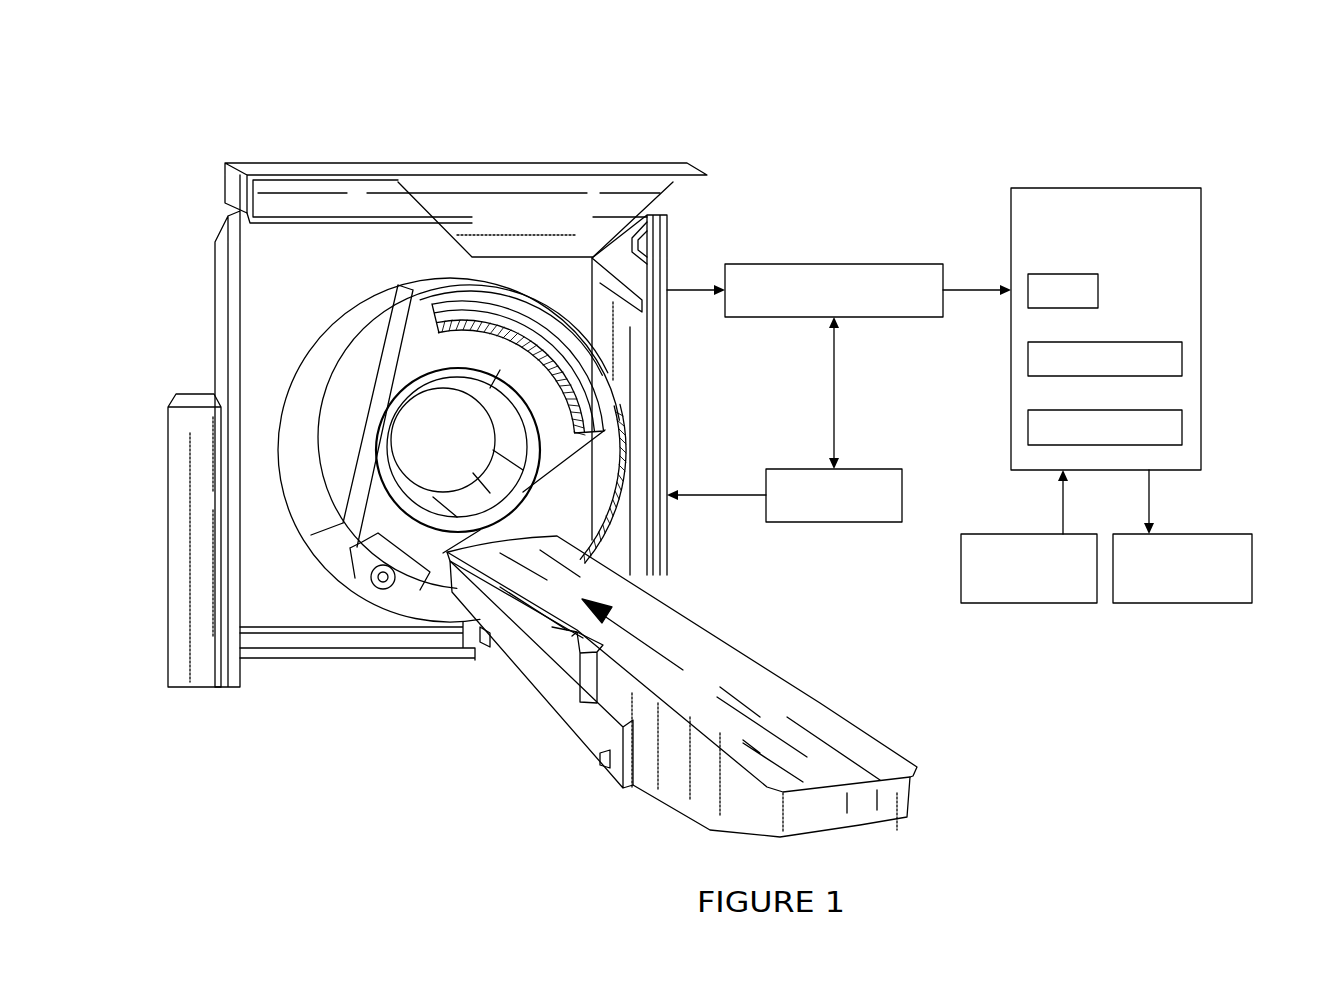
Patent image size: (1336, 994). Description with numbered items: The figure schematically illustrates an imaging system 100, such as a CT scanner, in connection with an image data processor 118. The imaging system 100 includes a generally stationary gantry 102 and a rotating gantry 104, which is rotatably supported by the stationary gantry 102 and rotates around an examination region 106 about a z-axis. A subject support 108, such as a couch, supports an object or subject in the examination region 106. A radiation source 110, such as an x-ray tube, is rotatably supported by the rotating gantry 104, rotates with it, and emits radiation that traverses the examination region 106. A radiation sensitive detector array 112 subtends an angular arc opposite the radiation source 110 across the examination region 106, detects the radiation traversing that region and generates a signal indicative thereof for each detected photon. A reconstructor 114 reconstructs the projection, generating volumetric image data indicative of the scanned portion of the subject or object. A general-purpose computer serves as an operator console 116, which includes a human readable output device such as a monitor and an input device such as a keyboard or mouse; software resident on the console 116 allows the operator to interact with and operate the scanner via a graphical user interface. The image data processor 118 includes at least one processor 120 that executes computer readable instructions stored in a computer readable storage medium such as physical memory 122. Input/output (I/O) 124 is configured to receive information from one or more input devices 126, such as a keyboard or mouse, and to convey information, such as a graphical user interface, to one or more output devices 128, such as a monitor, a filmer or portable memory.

The imaging system 100 is at (253, 79).
The stationary gantry 102 is at (222, 320).
The rotating gantry 104 is at (420, 352).
The examination region 106 is at (441, 457).
The subject support 108 is at (847, 740).
The radiation source 110 is at (383, 582).
The radiation sensitive detector array 112 is at (568, 373).
The reconstructor 114 is at (833, 264).
The operator console 116 is at (833, 522).
The image data processor 118 is at (1103, 188).
The processor 120 is at (1105, 342).
The memory 122 is at (1105, 410).
The input/output (I/O) 124 is at (1098, 290).
The input devices 126 is at (1028, 603).
The output devices 128 is at (1182, 603).